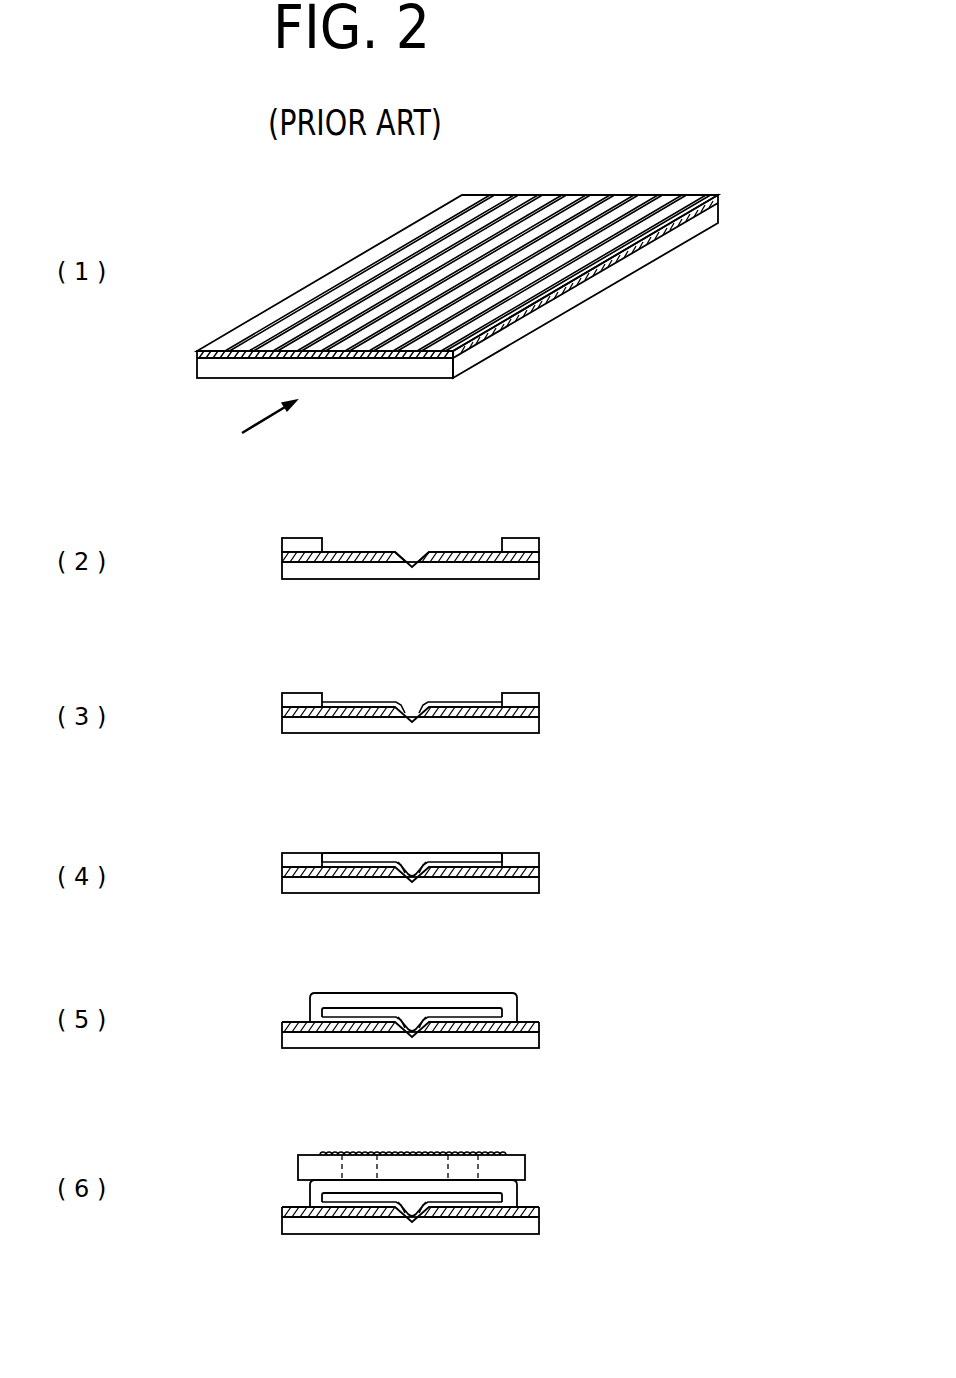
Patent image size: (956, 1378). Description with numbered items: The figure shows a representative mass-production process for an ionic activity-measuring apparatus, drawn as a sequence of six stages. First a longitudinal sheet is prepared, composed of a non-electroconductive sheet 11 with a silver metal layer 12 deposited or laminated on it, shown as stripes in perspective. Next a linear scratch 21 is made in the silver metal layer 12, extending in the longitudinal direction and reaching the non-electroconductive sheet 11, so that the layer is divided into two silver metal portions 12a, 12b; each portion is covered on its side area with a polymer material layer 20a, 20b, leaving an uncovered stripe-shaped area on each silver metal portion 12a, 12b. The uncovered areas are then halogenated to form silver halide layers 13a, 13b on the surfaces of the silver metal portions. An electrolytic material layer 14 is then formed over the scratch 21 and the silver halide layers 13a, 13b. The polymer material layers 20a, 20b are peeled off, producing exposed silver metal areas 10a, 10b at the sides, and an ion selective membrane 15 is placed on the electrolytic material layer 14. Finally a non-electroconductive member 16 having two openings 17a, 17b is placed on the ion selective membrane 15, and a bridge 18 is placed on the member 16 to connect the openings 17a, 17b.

The non-electroconductive sheet 11 is at (533, 323).
The silver metal layer 12 is at (590, 278).
The silver metal portion 12a is at (281, 555).
The silver metal portion 12b is at (539, 555).
The linear scratch 21 is at (410, 562).
The polymer material layer 20a is at (302, 538).
The polymer material layer 20b is at (528, 538).
The silver halide layer 13a is at (352, 702).
The silver halide layer 13b is at (480, 702).
The electrolytic material layer 14 is at (473, 853).
The ion selective membrane 15 is at (492, 993).
The exposed silver metal area 10a is at (305, 1022).
The exposed silver metal area 10b is at (540, 1025).
The non-electroconductive member 16 is at (525, 1165).
The opening 17a is at (362, 1162).
The opening 17b is at (472, 1162).
The bridge 18 is at (437, 1150).